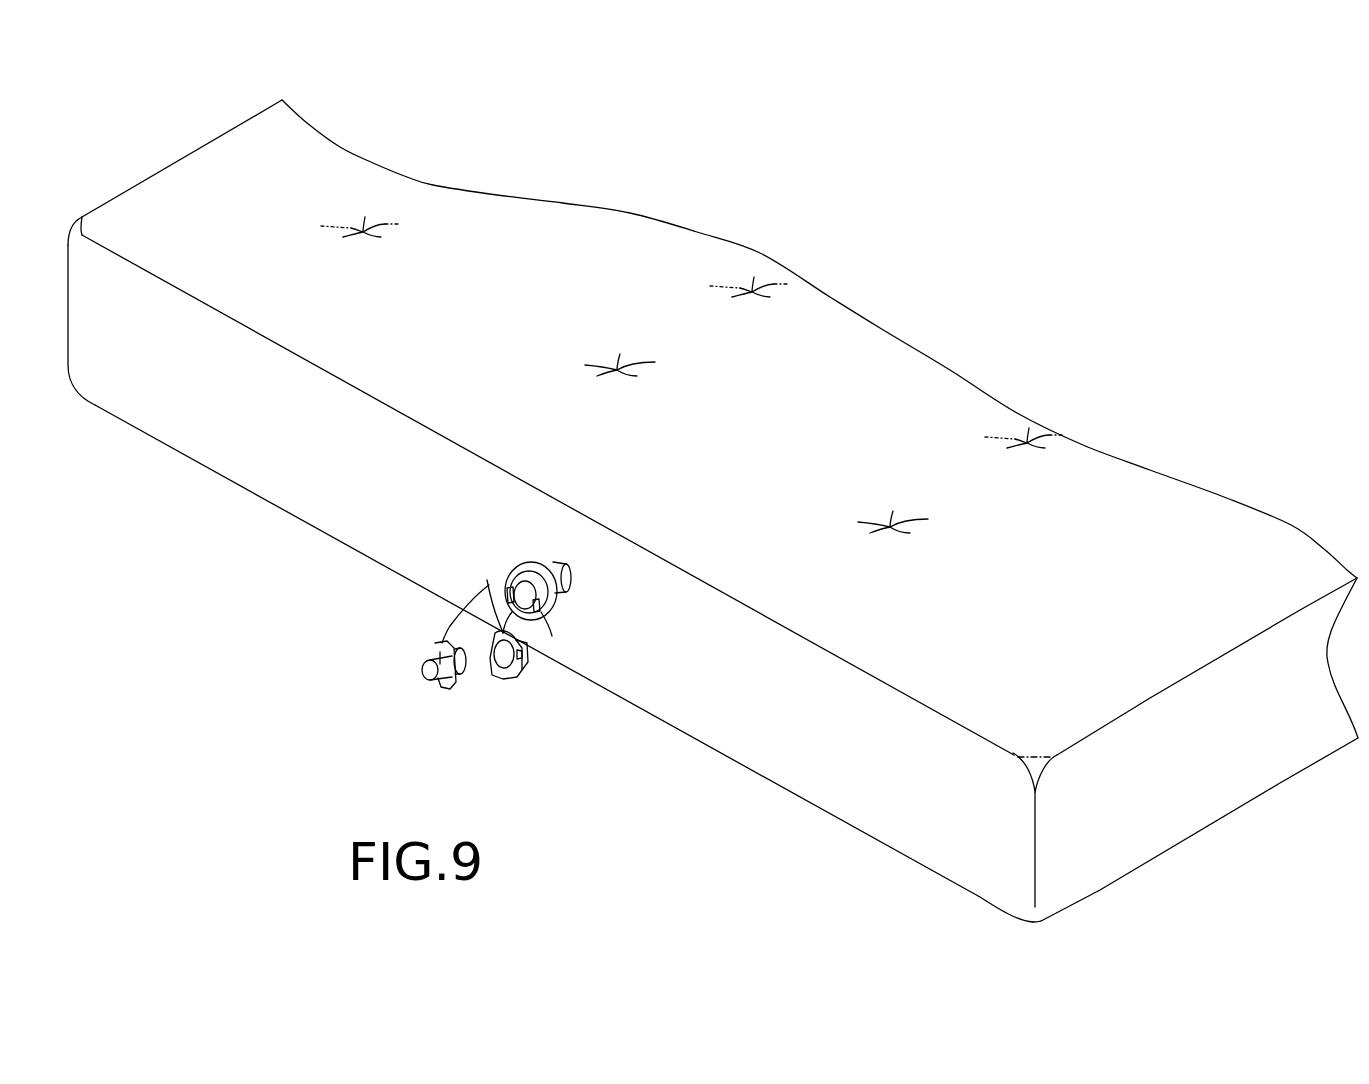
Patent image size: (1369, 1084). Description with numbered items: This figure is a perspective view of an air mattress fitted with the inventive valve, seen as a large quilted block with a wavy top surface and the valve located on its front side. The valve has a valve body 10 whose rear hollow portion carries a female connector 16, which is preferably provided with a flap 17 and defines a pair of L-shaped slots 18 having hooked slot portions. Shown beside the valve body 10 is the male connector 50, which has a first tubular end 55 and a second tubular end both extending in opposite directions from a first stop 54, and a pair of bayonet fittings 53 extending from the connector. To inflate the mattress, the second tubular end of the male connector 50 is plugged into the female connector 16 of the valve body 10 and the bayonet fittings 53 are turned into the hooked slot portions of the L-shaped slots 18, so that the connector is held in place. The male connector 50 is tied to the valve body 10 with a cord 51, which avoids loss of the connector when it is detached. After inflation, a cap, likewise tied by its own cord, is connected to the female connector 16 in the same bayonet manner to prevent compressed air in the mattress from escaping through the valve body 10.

The valve body 10 is at (530, 481).
The female connector 16 is at (556, 562).
The flap 17 is at (489, 585).
The L-shaped slots 18 is at (510, 588).
The male connector 50 is at (501, 628).
The cord 51 is at (487, 580).
The bayonet fittings 53 is at (518, 658).
The first stop 54 is at (502, 669).
The first tubular end 55 is at (420, 667).